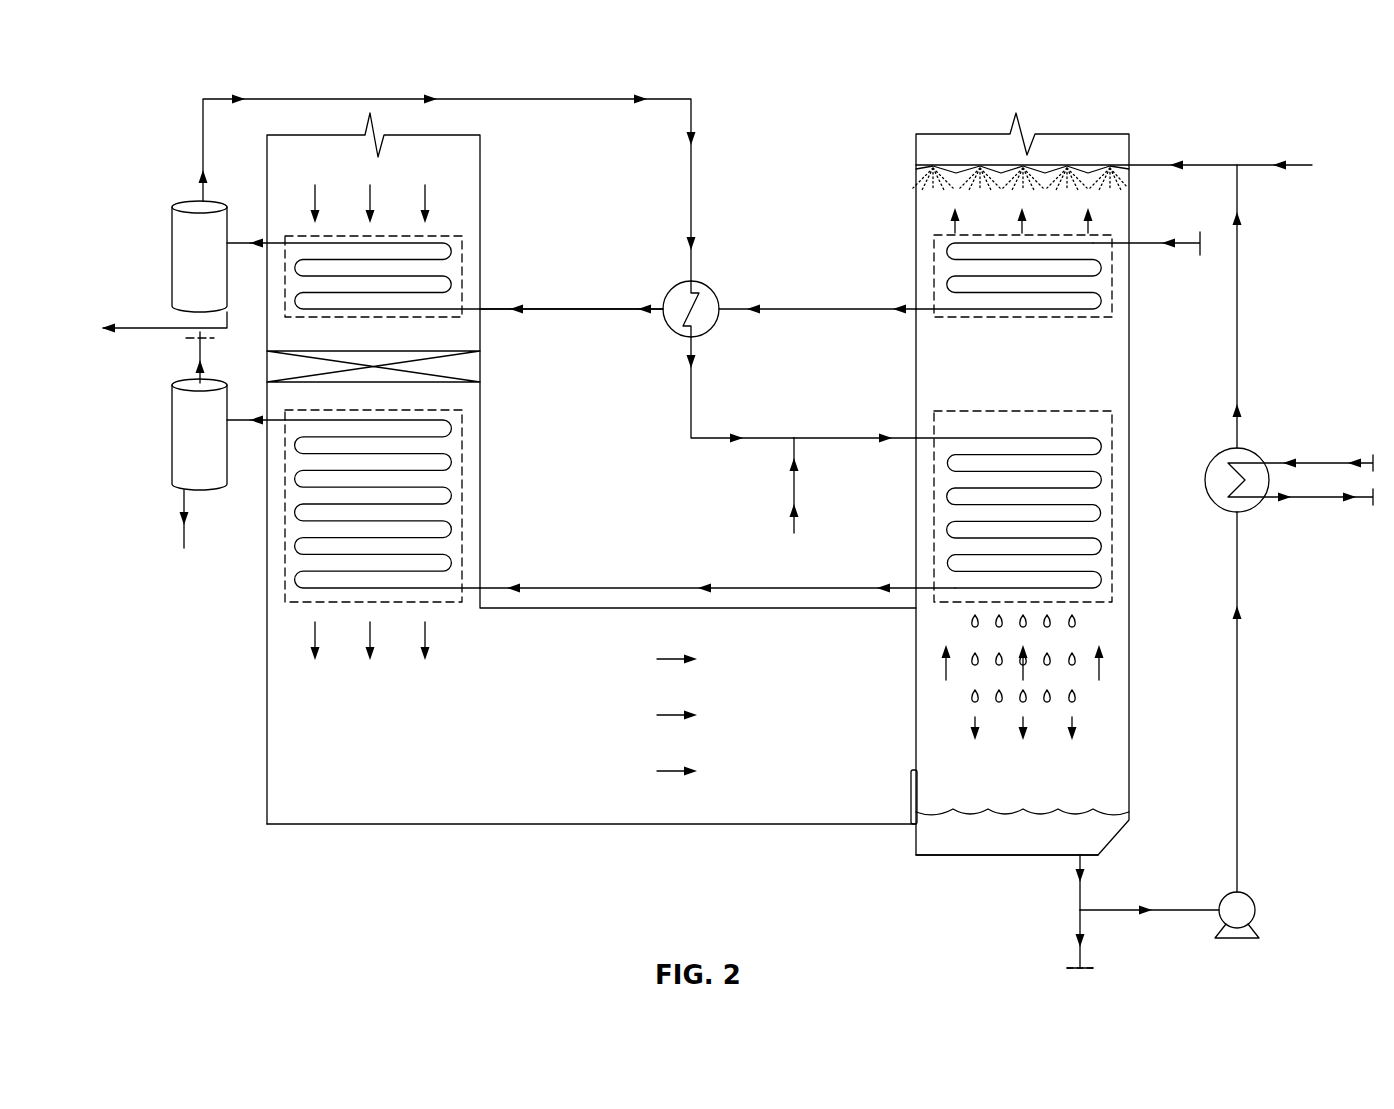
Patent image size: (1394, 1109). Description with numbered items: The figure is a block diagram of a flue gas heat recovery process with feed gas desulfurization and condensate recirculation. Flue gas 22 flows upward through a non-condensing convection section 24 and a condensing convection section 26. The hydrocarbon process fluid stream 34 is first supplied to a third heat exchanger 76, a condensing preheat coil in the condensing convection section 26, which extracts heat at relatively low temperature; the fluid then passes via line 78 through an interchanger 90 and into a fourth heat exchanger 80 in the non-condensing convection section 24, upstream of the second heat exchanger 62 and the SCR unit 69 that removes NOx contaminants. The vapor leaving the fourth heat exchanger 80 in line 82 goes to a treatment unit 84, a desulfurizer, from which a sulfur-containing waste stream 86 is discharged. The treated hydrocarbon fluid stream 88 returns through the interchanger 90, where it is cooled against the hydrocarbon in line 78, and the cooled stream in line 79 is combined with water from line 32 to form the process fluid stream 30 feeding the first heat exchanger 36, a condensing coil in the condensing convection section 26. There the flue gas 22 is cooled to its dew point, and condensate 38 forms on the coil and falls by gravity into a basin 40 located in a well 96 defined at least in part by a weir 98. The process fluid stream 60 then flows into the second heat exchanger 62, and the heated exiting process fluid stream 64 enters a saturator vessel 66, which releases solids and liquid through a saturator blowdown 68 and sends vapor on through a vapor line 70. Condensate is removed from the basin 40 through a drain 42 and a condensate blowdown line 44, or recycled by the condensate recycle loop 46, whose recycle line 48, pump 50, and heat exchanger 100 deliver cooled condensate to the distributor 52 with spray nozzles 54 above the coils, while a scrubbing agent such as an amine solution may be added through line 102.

The flue gas 22 is at (370, 203).
The non-condensing convection section 24 is at (548, 416).
The condensing convection section 26 is at (848, 217).
The process fluid stream 30 is at (838, 438).
The hydrocarbon feed line / water stream 32 is at (796, 520).
The hydrocarbon process fluid stream 34 is at (1143, 243).
The first heat exchanger 36 is at (1112, 523).
The condensate 38 is at (1076, 698).
The basin 40 is at (995, 833).
The drain 42 is at (1078, 893).
The condensate blowdown line 44 is at (1076, 924).
The condensate recycle loop 46 is at (1262, 787).
The recycle line 48 is at (1116, 912).
The pump 50 is at (1250, 897).
The distributor 52 is at (930, 167).
The spray nozzles 54 is at (1090, 177).
The process fluid stream 60 is at (553, 587).
The second heat exchanger 62 is at (465, 428).
The exiting process fluid stream 64 is at (236, 419).
The saturator vessel 66 is at (190, 418).
The saturator blowdown 68 is at (180, 507).
The SCR unit 69 is at (482, 366).
The vapor line 70 is at (195, 348).
The third heat exchanger 76 is at (1112, 304).
The line 78 is at (550, 307).
The line 79 is at (723, 438).
The fourth heat exchanger 80 is at (465, 252).
The line 82 is at (236, 242).
The treatment unit 84 is at (190, 267).
The sulfur-containing waste stream 86 is at (158, 326).
The hydrocarbon fluid stream 88 is at (353, 95).
The interchanger 90 is at (714, 290).
The well 96 is at (955, 857).
The weir 98 is at (914, 770).
The heat exchanger 100 is at (1252, 455).
The scrubbing agent addition line 102 is at (1295, 163).